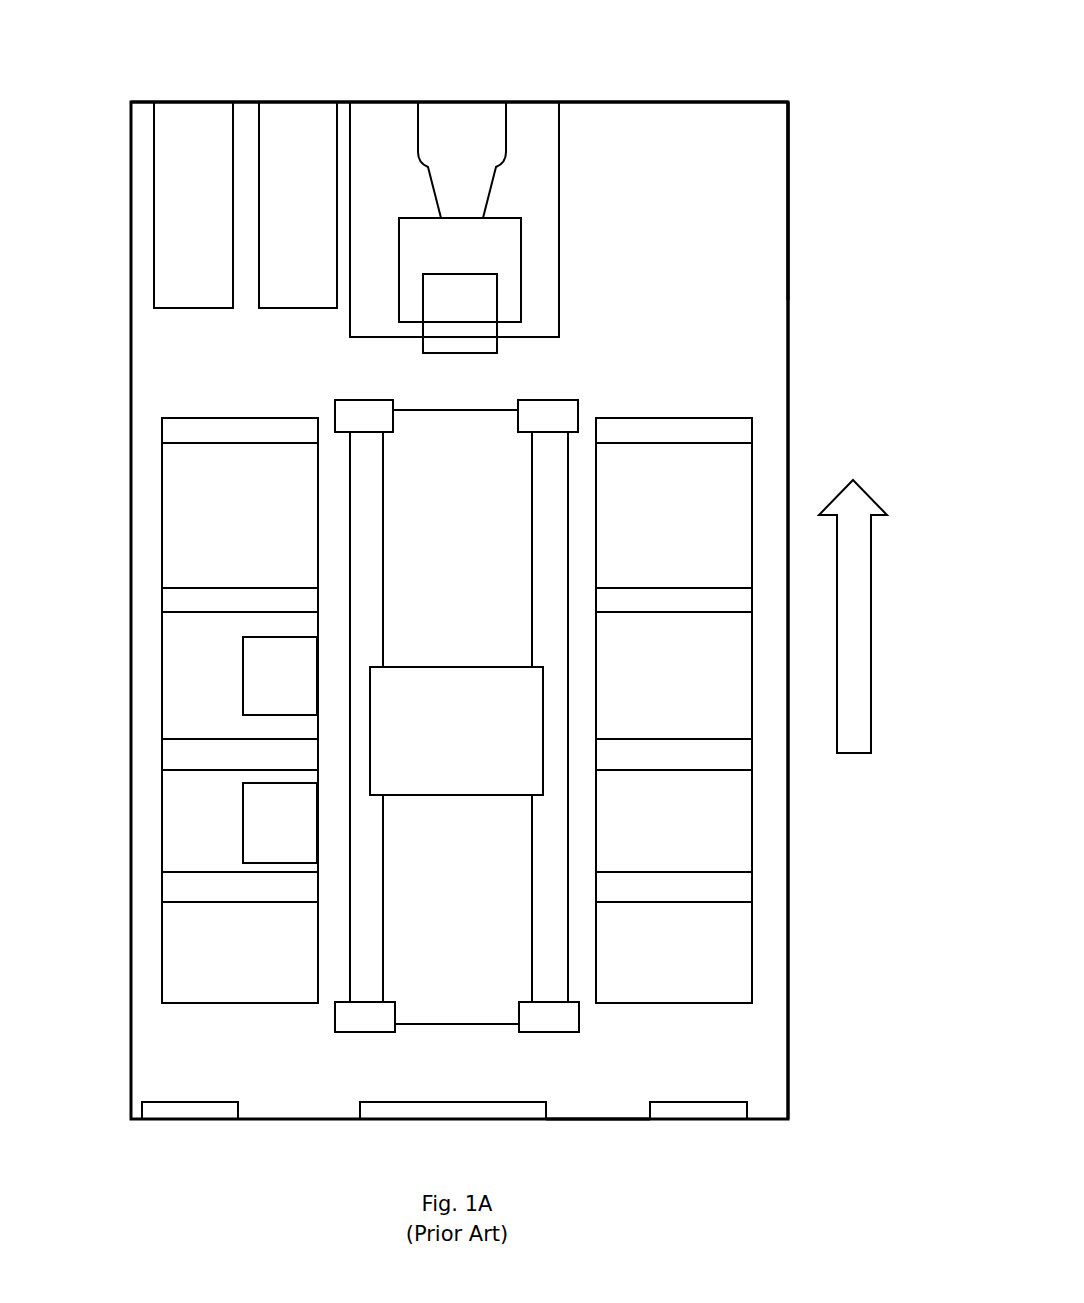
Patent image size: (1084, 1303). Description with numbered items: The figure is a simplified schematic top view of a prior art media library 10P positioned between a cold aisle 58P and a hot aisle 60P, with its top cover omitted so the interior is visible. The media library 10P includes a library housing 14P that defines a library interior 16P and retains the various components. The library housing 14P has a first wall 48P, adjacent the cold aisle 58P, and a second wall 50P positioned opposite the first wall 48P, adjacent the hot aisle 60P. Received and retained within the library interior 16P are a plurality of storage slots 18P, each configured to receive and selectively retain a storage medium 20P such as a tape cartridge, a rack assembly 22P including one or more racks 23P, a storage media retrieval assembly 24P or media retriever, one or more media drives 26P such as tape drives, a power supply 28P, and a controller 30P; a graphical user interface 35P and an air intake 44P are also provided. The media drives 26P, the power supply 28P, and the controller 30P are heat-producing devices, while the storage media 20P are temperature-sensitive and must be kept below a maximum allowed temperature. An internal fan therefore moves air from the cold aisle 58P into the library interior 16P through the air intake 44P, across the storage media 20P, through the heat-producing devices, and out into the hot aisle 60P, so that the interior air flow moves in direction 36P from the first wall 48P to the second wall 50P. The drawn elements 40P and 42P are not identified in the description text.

The media library 10P is at (133, 78).
The library housing 14P is at (790, 218).
The library interior 16P is at (760, 157).
The storage slots 18P is at (190, 938).
The storage media 20P is at (444, 325).
The rack assembly 22P is at (328, 1028).
The racks 23P is at (580, 1020).
The storage media retrieval assembly 24P is at (442, 742).
The media drives 26P is at (418, 102).
The power supply 28P is at (170, 226).
The controller 30P is at (280, 124).
The graphical user interface 35P is at (370, 1115).
The direction 36P is at (872, 655).
The right feed line 40P is at (506, 102).
The battery column 42P is at (143, 563).
The air intake 44P is at (147, 1118).
The first wall 48P is at (567, 1122).
The second wall 50P is at (748, 100).
The cold aisle 58P is at (440, 1162).
The hot aisle 60P is at (330, 30).